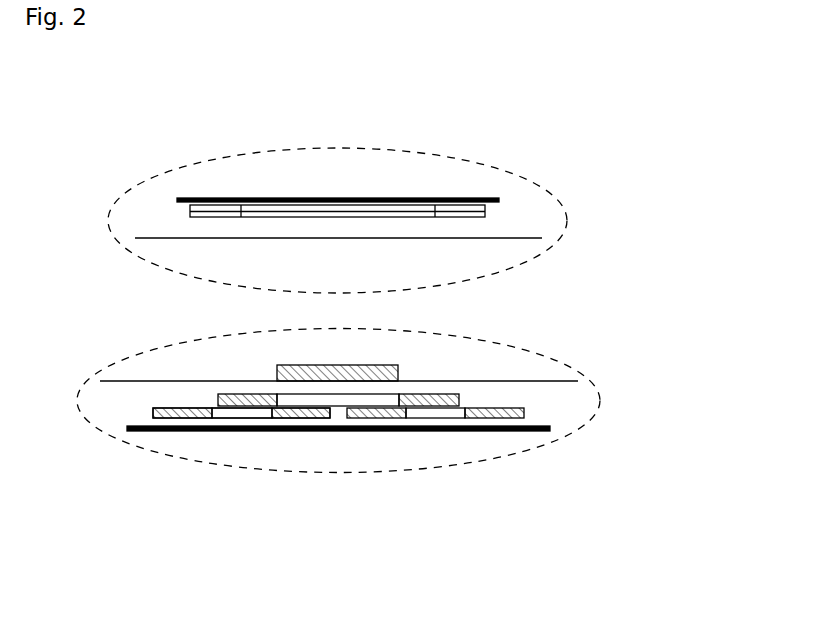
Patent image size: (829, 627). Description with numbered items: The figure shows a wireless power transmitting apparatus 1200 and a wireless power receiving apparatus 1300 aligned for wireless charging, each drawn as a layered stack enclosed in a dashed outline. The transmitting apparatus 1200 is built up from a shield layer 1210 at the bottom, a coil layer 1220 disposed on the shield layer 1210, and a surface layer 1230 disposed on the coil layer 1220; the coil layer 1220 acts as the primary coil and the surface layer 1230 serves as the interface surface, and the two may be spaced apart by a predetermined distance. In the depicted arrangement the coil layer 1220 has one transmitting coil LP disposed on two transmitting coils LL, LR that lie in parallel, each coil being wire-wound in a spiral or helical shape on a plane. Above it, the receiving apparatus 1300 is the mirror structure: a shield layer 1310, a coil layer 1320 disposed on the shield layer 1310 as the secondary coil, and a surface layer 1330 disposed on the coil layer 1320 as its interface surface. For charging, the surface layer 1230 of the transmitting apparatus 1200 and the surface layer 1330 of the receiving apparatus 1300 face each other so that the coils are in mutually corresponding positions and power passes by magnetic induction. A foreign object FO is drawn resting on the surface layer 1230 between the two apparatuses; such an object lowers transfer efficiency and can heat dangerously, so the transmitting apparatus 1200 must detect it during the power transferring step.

The wireless power receiving apparatus 1300 is at (550, 197).
The shield layer 1310 is at (448, 198).
The coil layer 1320 is at (458, 215).
The surface layer 1330 is at (415, 240).
The wireless power transmitting apparatus 1200 is at (453, 465).
The surface layer 1230 is at (173, 381).
The foreign object FO is at (337, 365).
The transmitting coil LP is at (459, 400).
The transmitting coil LL is at (297, 418).
The transmitting coil LR is at (446, 418).
The coil layer 1220 is at (240, 418).
The shield layer 1210 is at (338, 431).